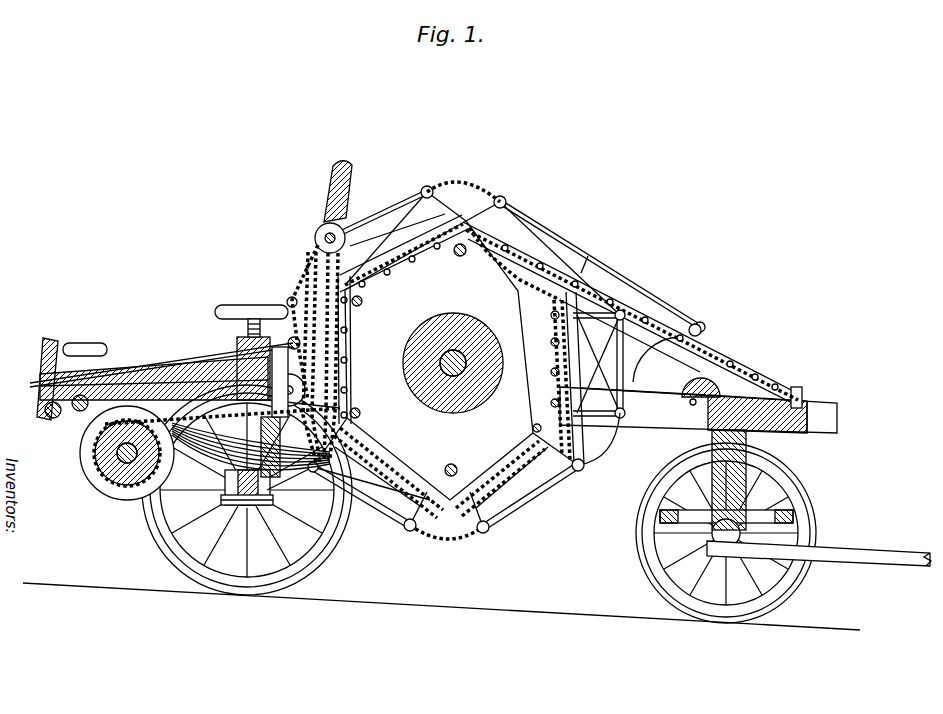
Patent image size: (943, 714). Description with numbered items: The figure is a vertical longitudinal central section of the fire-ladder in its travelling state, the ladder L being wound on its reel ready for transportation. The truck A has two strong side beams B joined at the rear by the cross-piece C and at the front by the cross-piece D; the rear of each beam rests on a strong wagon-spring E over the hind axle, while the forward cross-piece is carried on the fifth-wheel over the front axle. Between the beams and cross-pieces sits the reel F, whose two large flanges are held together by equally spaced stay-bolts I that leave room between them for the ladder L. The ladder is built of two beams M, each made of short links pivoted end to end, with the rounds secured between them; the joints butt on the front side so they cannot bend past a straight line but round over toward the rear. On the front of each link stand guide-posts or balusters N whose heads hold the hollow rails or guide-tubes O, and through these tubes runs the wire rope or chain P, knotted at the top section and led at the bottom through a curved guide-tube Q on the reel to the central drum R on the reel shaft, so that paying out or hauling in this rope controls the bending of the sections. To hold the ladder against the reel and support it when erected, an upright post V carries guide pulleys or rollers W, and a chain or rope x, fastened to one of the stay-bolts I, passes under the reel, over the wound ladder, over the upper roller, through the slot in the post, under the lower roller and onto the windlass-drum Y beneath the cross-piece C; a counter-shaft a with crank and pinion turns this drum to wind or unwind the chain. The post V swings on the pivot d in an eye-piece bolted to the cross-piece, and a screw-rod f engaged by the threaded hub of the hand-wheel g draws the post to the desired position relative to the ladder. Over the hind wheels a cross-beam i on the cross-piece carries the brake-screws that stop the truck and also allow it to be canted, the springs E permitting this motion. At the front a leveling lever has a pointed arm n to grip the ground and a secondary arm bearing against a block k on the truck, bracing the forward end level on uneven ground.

The main frame beam A is at (698, 458).
The side beams B is at (643, 398).
The cross-piece C is at (190, 382).
The cross-piece D is at (715, 385).
The wagon-spring E is at (251, 445).
The reel F is at (452, 369).
The stay-bolts I is at (454, 360).
The ladder L is at (570, 319).
The beams M is at (546, 364).
The guide-posts or balusters N is at (559, 297).
The guide-tubes or hollow rails O is at (515, 259).
The wire rope or chain P is at (559, 363).
The curved guide-tube Q is at (443, 412).
The central drum R is at (453, 363).
The upright post V is at (284, 406).
The guide pulleys or rollers W is at (312, 311).
The windlass-drum Y is at (210, 453).
The counter-shaft a is at (84, 386).
The pivot d is at (251, 312).
The screw-rod f is at (161, 365).
The hand-wheel g is at (47, 384).
The cross-beam i is at (462, 371).
The block k is at (656, 359).
The arm n is at (85, 341).
The chain or rope x is at (379, 362).